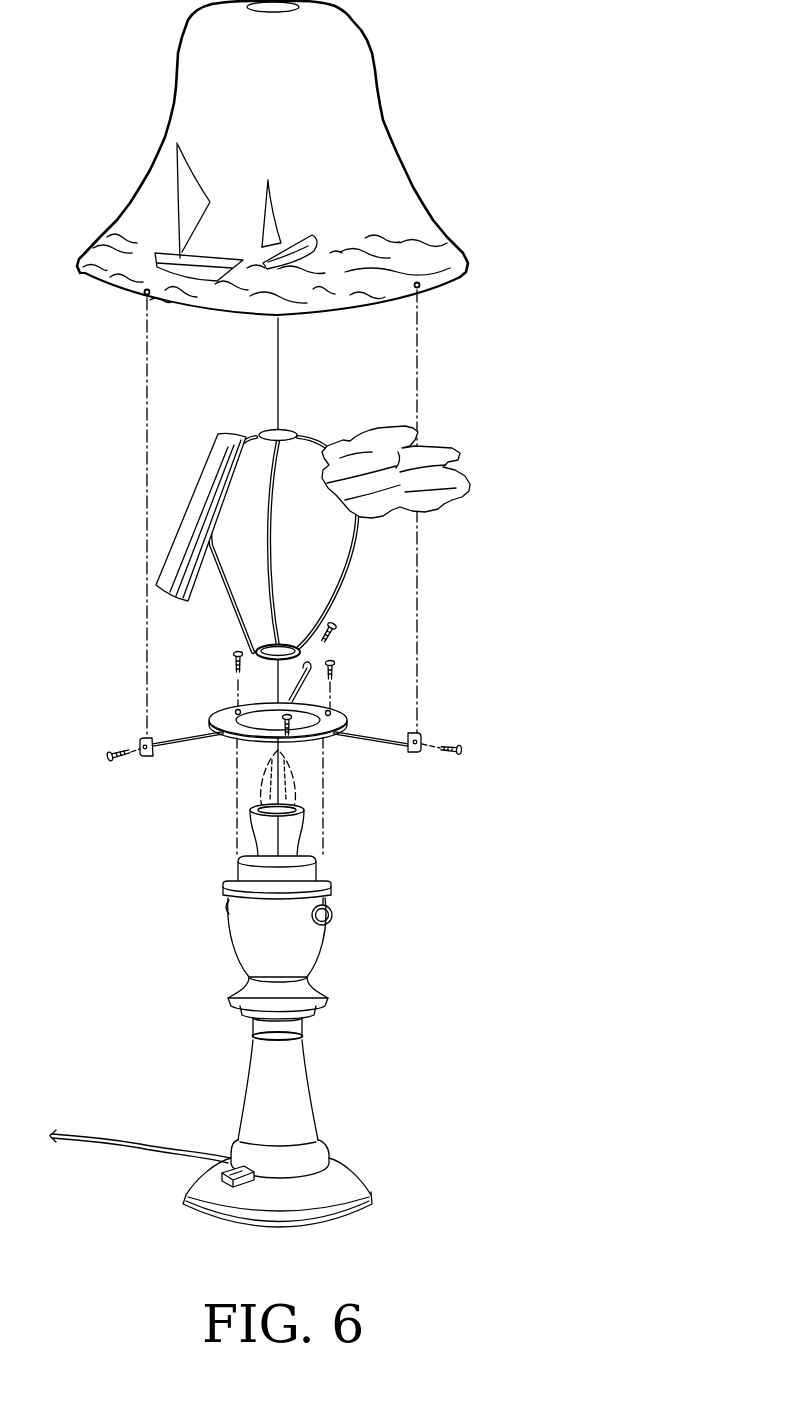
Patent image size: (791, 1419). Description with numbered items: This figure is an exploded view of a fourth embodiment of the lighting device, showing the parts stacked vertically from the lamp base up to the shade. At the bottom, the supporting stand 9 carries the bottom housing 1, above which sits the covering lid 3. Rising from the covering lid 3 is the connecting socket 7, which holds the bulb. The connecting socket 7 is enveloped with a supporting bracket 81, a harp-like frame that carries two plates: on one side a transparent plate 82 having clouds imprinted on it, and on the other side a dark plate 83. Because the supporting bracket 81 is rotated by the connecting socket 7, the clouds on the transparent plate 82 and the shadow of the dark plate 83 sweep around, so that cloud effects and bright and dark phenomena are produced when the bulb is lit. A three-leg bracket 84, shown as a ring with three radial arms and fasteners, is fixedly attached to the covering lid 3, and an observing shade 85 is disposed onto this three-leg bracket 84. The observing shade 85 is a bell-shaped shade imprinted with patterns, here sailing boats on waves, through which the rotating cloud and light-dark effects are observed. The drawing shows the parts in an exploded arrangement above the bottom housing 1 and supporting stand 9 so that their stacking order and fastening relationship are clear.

The observing shade 85 is at (375, 160).
The dark plate 83 is at (210, 510).
The transparent plate 82 is at (442, 505).
The supporting bracket 81 is at (310, 650).
The three-leg bracket 84 is at (317, 708).
The connecting socket 7 is at (283, 832).
The covering lid 3 is at (318, 868).
The bottom housing 1 is at (260, 930).
The supporting stand 9 is at (260, 1101).